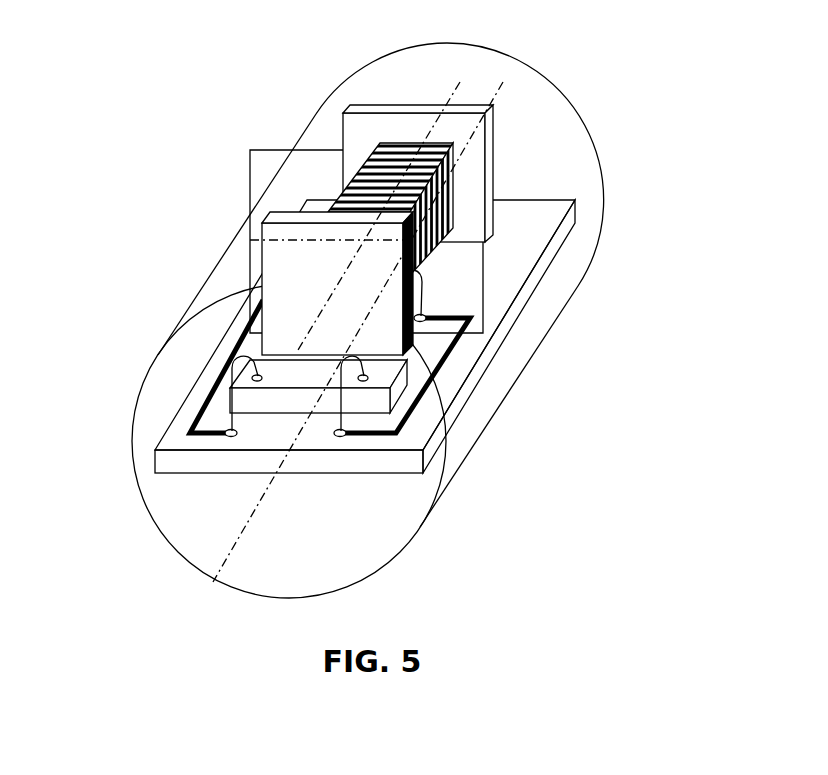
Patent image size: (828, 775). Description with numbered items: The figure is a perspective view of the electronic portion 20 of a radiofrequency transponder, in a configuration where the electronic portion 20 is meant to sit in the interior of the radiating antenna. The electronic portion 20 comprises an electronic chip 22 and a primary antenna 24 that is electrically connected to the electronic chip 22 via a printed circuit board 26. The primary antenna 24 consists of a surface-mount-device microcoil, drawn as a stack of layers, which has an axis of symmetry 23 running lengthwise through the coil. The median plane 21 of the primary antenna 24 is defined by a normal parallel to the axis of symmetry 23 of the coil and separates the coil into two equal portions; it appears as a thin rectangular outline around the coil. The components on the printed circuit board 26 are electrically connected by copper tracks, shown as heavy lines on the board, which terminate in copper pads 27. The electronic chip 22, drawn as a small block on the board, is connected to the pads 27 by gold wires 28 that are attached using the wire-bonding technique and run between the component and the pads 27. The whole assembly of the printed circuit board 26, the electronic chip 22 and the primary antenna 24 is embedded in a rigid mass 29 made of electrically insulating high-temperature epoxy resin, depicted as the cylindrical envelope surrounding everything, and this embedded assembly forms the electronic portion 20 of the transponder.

The electronic portion 20 is at (205, 197).
The median plane 21 is at (484, 283).
The electronic chip 22 is at (279, 367).
The axis of symmetry 23 is at (430, 130).
The primary antenna 24 is at (440, 180).
The printed circuit board 26 is at (178, 437).
The copper pads 27 is at (245, 436).
The gold wires 28 is at (238, 407).
The rigid mass 29 is at (598, 192).